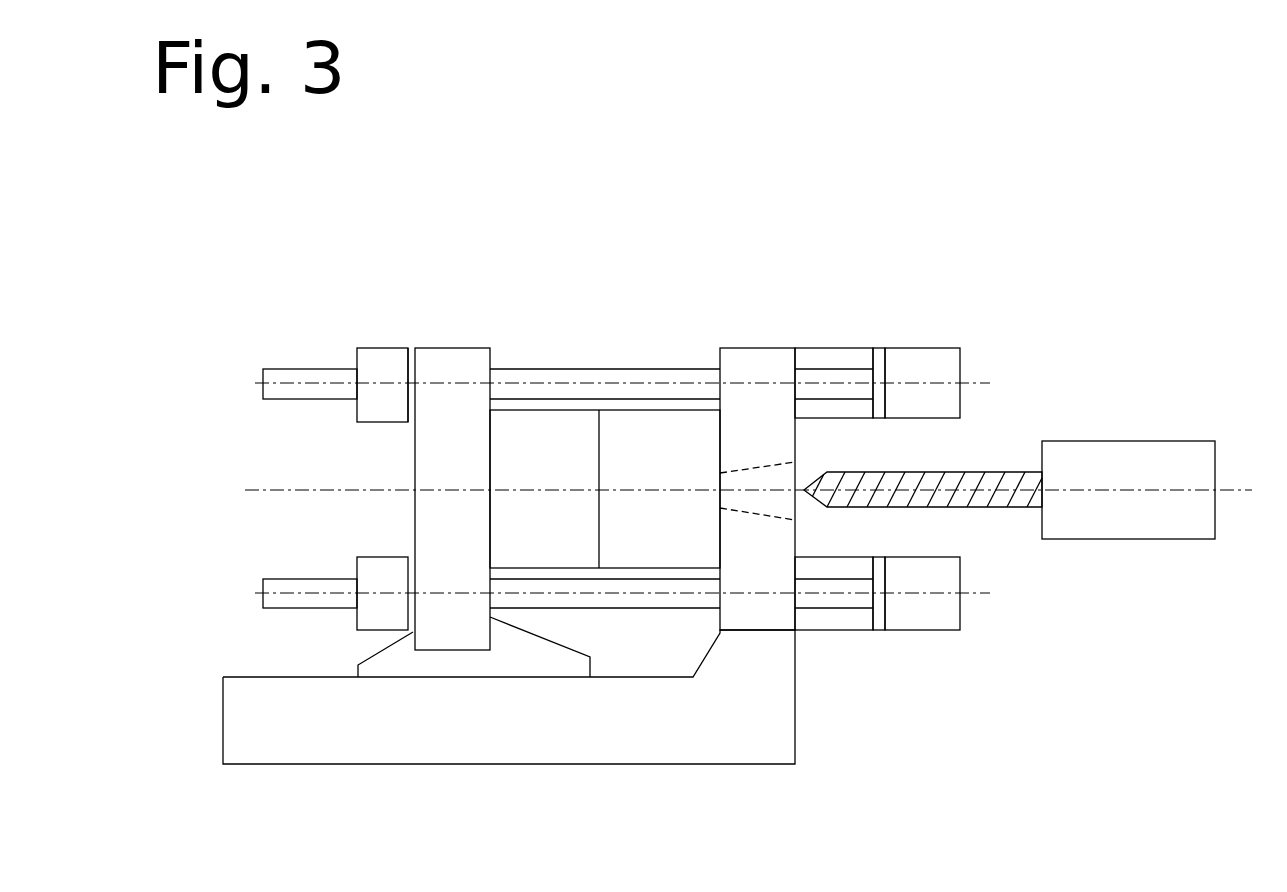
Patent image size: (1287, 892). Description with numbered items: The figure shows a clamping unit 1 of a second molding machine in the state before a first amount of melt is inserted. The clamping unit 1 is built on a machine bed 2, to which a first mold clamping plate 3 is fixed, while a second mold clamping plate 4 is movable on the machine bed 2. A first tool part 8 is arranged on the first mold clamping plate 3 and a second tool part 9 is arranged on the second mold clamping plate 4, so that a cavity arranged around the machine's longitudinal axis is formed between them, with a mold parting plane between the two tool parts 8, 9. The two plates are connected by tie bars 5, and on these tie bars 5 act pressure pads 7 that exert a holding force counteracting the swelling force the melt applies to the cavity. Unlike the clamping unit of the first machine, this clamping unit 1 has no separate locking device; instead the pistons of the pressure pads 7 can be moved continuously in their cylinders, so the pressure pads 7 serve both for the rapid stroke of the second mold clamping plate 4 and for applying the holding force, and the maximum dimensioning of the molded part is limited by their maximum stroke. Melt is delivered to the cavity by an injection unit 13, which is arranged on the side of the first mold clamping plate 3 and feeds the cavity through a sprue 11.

The clamping unit 1 is at (916, 277).
The machine bed 2 is at (745, 720).
The first mold clamping plate 3 is at (762, 360).
The second mold clamping plate 4 is at (439, 358).
The tie bar 5 is at (537, 374).
The pressure pad 7 is at (923, 358).
The first tool part 8 is at (683, 528).
The second tool part 9 is at (748, 507).
The sprue 11 is at (767, 478).
The injection unit 13 is at (1083, 548).